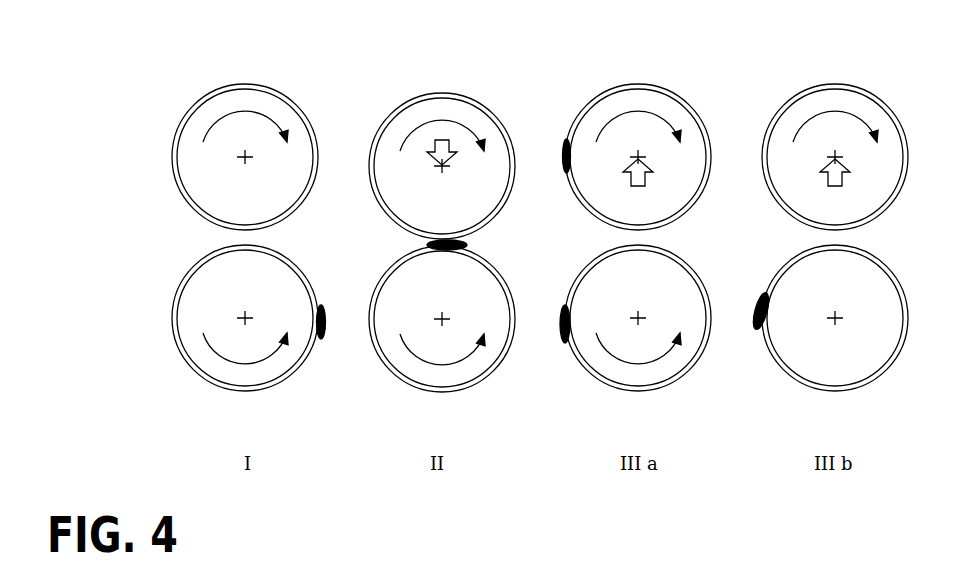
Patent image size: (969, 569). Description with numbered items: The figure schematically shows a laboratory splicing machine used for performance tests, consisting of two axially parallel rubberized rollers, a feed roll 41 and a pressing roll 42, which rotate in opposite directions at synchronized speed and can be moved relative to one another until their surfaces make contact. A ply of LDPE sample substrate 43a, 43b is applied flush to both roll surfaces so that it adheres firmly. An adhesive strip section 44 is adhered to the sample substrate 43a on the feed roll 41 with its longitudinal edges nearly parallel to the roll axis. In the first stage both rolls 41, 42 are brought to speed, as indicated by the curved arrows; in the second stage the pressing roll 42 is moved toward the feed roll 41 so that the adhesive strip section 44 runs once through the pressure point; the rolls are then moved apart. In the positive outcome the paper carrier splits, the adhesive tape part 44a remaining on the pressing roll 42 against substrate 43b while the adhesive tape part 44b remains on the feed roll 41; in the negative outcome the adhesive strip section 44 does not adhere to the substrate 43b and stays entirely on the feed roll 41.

The feed roll 41 is at (215, 293).
The pressing roll 42 is at (213, 171).
The sample substrate 43a is at (187, 363).
The sample substrate 43b is at (200, 98).
The adhesive strip section 44 is at (326, 320).
The adhesive tape part 44a is at (563, 150).
The adhesive tape part 44b is at (563, 322).